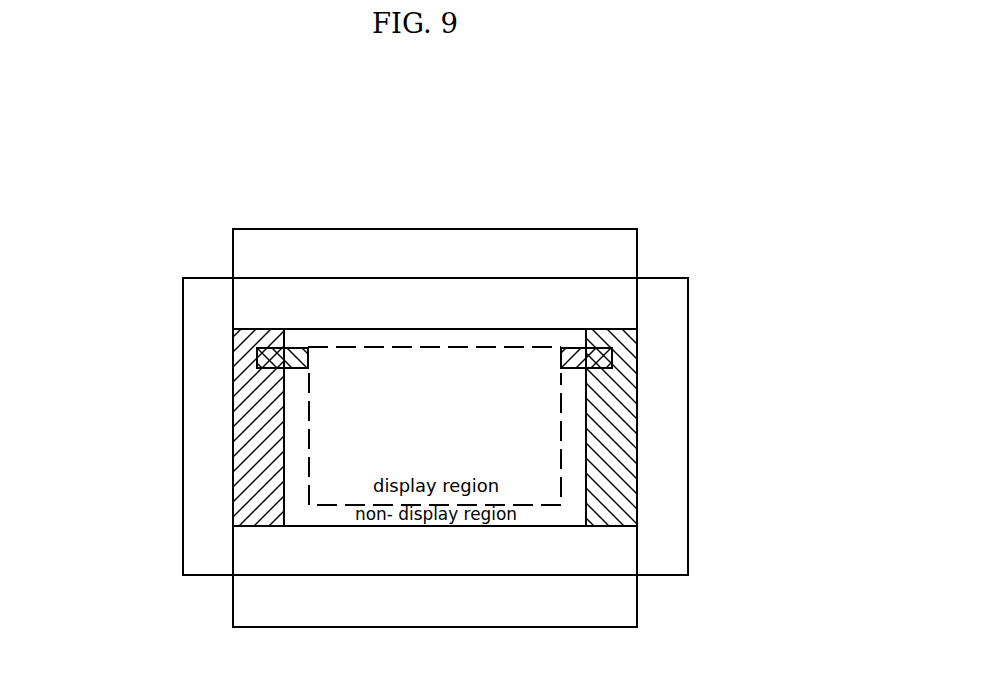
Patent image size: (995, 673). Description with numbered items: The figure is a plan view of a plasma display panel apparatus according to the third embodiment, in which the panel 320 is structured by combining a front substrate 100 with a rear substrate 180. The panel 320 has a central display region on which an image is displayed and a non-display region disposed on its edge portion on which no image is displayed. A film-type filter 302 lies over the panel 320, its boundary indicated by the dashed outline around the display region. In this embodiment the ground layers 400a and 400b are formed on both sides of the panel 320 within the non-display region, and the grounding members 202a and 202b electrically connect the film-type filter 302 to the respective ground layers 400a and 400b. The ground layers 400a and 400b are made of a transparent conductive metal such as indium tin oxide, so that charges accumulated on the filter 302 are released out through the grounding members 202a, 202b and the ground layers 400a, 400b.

The front substrate 100 is at (662, 310).
The rear substrate 180 is at (610, 258).
The panel 320 is at (825, 262).
The film-type filter 302 is at (422, 330).
The grounding member 202a is at (262, 358).
The grounding member 202b is at (608, 357).
The ground layer 400a is at (250, 477).
The ground layer 400b is at (612, 491).